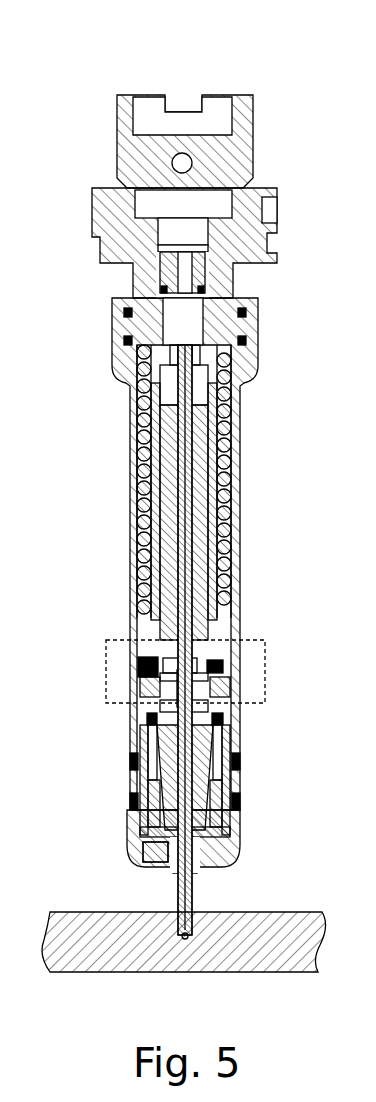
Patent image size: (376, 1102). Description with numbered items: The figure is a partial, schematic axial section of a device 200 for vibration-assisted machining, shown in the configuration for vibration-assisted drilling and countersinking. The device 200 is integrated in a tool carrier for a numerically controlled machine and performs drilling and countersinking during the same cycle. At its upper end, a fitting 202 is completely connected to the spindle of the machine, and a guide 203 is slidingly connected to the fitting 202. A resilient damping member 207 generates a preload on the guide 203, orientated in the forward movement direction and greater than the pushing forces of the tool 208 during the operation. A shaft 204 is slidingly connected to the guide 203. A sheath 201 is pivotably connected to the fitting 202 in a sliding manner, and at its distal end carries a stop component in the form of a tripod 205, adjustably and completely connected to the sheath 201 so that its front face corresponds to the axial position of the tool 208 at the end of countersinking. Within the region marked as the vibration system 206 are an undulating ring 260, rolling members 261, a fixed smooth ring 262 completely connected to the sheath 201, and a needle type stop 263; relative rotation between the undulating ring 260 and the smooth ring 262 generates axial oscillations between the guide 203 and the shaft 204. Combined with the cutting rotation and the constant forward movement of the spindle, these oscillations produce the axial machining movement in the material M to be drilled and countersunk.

The device 200 is at (189, 472).
The sheath 201 is at (258, 372).
The fitting 202 is at (275, 268).
The guide 203 is at (240, 506).
The shaft 204 is at (238, 765).
The tripod 205 is at (225, 866).
The vibration system 206 is at (262, 707).
The resilient damping member 207 is at (238, 594).
The tool 208 is at (148, 864).
The undulating ring 260 is at (132, 664).
The rolling members 261 is at (245, 673).
The fixed smooth ring 262 is at (132, 676).
The needle type stop 263 is at (130, 700).
The material M is at (303, 945).